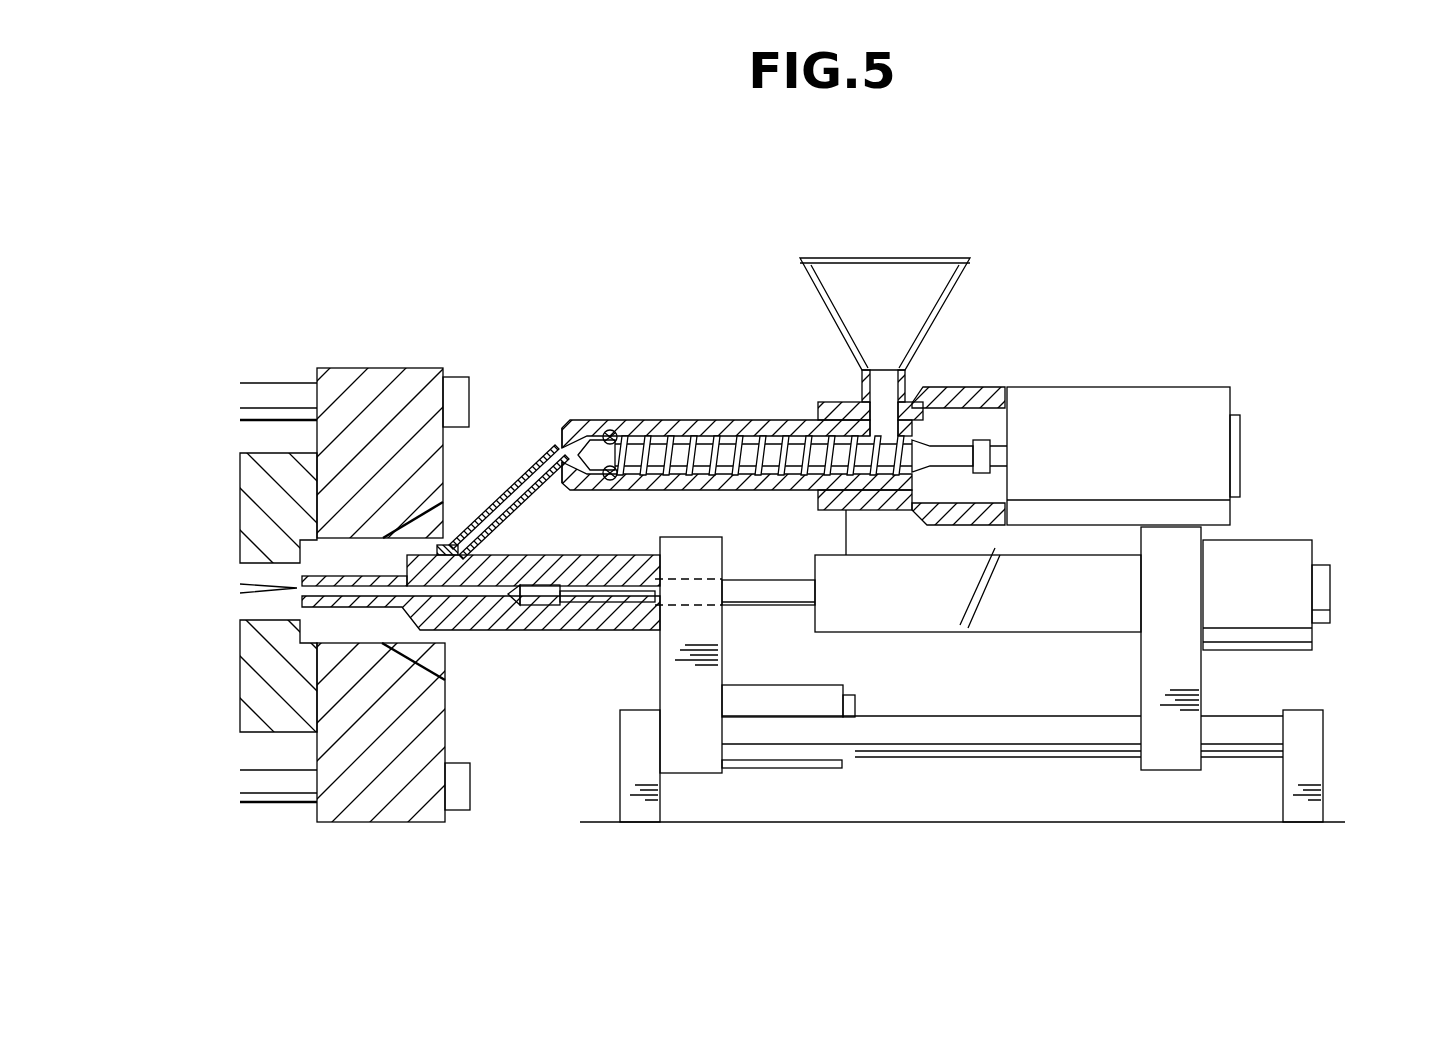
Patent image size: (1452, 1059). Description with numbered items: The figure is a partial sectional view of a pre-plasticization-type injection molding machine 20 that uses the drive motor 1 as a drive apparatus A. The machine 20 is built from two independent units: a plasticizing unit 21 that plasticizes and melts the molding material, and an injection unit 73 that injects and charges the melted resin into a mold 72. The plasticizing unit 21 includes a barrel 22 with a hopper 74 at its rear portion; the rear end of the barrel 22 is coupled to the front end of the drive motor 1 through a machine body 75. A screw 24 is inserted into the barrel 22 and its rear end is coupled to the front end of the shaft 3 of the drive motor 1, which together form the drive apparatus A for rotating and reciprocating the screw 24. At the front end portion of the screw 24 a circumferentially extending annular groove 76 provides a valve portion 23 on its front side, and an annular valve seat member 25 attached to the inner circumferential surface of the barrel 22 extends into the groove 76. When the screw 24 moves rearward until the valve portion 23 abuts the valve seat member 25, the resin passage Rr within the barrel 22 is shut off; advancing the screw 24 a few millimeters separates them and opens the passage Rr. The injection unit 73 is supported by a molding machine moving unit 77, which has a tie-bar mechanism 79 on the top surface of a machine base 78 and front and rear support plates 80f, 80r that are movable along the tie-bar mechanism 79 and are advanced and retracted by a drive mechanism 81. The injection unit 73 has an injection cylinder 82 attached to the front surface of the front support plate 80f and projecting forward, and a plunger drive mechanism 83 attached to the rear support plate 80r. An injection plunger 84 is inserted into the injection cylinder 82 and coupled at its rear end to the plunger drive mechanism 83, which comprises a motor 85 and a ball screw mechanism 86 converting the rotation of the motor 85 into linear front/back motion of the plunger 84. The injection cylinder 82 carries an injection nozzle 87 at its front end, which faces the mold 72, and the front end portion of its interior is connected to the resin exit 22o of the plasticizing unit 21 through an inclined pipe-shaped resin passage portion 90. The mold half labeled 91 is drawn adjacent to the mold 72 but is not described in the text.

The pre-plasticization-type injection molding machine 20 is at (1103, 242).
The drive apparatus A is at (1247, 391).
The plasticizing unit 21 is at (754, 350).
The barrel 22 is at (703, 420).
The resin exit 22o is at (552, 402).
The valve portion 23 is at (596, 420).
The annular groove 76 is at (620, 420).
The valve seat member 25 is at (678, 490).
The screw 24 is at (780, 490).
The resin passage Rr is at (597, 477).
The hopper 74 is at (855, 258).
The machine body 75 is at (980, 387).
The shaft 3 is at (1007, 433).
The drive motor 1 is at (1177, 387).
The plunger drive mechanism 83 is at (1274, 533).
The motor 85 is at (1335, 566).
The ball screw mechanism 86 is at (922, 634).
The tie-bar mechanism 79 is at (968, 716).
The drive mechanism 81 is at (842, 766).
The machine base 78 is at (985, 822).
The molding machine moving unit 77 is at (1322, 687).
The front support plate 80f is at (700, 774).
The rear support plate 80r is at (1178, 772).
The injection unit 73 is at (603, 642).
The mold 72 is at (272, 455).
The mold 91 is at (366, 365).
The resin passage portion 90 is at (493, 497).
The injection plunger 84 is at (553, 555).
The injection cylinder 82 is at (511, 632).
The injection nozzle 87 is at (368, 607).